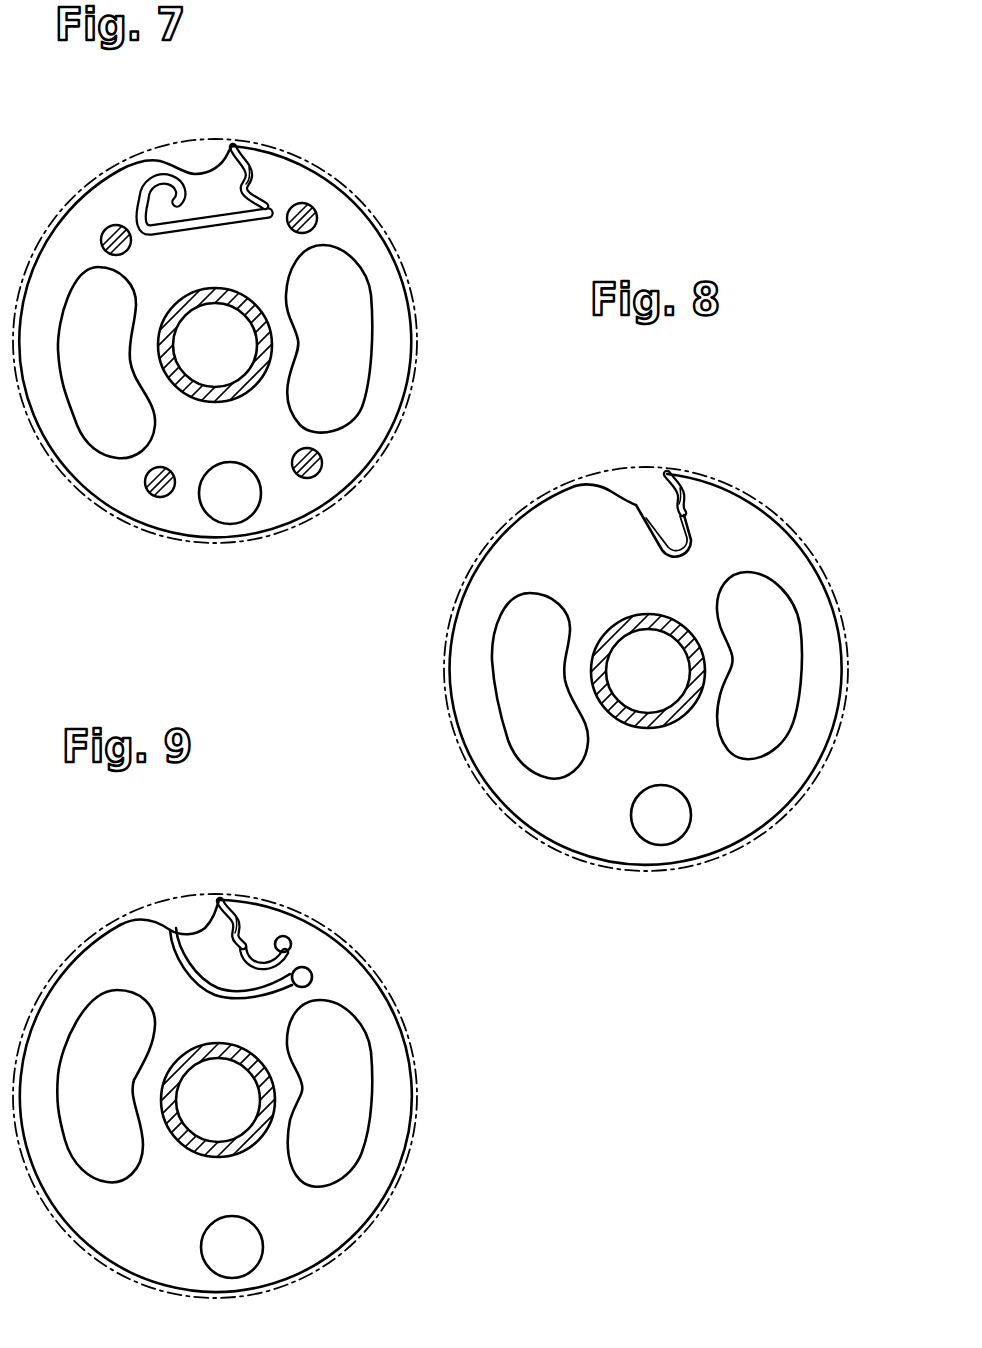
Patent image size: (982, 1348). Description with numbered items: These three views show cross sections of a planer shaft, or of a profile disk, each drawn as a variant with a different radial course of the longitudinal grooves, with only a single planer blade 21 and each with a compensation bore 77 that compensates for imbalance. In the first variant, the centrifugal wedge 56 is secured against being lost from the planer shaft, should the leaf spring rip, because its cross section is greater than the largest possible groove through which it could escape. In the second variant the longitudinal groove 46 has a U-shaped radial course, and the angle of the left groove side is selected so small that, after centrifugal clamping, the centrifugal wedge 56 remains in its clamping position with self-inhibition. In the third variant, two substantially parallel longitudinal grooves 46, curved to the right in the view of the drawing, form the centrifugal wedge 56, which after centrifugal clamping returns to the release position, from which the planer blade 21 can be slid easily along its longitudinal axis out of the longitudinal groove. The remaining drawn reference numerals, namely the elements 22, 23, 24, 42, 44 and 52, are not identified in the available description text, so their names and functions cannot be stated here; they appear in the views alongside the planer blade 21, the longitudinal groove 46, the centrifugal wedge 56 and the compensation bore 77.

In FIG. 7, the planer blade 21 is at (234, 147).
In FIG. 8, the planer blade 21 is at (668, 474).
In FIG. 9, the planer blade 21 is at (221, 902).
In FIG. 7, the projections 22 is at (231, 147).
In FIG. 8, the projections 22 is at (663, 476).
In FIG. 9, the projections 22 is at (219, 901).
In FIG. 7, the disc 23 is at (362, 212).
In FIG. 8, the disc 23 is at (472, 584).
In FIG. 9, the disc 23 is at (362, 969).
In FIG. 7, the outer circumference 24 is at (400, 257).
In FIG. 8, the outer circumference 24 is at (450, 640).
In FIG. 9, the outer circumference 24 is at (400, 1014).
In FIG. 7, the opening 42 is at (334, 409).
In FIG. 8, the opening 42 is at (747, 594).
In FIG. 9, the opening 42 is at (338, 1162).
In FIG. 7, the opening 44 is at (112, 423).
In FIG. 8, the opening 44 is at (535, 683).
In FIG. 9, the opening 44 is at (112, 1155).
In FIG. 9, the longitudinal groove 46 is at (195, 975).
In FIG. 7, the retaining bracket 52 is at (270, 208).
In FIG. 7, the centrifugal wedge 56 is at (208, 188).
In FIG. 8, the centrifugal wedge 56 is at (660, 521).
In FIG. 9, the centrifugal wedge 56 is at (218, 950).
In FIG. 7, the compensation bore 77 is at (213, 508).
In FIG. 8, the compensation bore 77 is at (643, 831).
In FIG. 9, the compensation bore 77 is at (224, 1270).